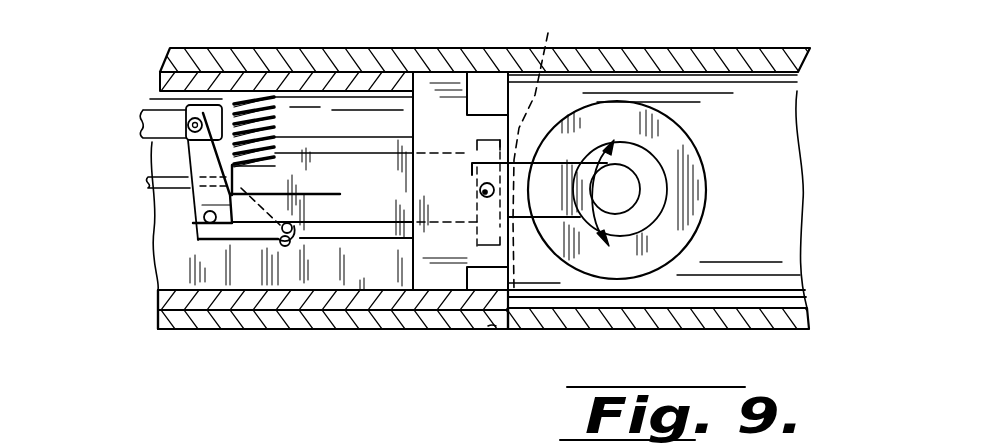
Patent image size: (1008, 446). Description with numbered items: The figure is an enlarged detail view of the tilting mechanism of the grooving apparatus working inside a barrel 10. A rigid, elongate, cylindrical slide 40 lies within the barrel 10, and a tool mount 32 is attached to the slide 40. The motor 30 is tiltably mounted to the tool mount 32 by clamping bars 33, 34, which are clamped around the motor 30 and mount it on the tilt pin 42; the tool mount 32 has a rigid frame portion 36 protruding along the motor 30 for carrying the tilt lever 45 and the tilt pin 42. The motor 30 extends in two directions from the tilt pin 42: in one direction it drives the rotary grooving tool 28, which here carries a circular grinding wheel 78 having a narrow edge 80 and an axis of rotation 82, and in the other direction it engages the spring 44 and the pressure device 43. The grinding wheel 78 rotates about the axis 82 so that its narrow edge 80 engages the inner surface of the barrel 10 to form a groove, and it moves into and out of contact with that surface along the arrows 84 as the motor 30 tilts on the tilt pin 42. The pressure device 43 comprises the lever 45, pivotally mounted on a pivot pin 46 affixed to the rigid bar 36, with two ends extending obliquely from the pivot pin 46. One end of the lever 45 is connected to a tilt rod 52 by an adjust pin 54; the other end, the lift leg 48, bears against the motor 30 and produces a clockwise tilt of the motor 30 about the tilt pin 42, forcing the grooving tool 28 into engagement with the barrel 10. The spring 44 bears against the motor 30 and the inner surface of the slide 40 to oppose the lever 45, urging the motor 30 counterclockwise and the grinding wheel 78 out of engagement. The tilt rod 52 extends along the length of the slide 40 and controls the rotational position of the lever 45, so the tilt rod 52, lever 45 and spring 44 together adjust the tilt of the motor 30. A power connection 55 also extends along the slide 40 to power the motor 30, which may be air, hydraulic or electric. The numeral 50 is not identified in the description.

The barrel 10 is at (384, 52).
The rotary grooving tool 28 is at (577, 222).
The motor 30 is at (380, 207).
The tool mount 32 is at (438, 95).
The clamping bar 33 is at (541, 147).
The clamping bar 34 is at (492, 330).
The rigid frame portion 36 is at (337, 245).
The slide 40 is at (314, 72).
The tilt pin 42 is at (478, 194).
The pressure device 43 is at (202, 248).
The spring 44 is at (242, 100).
The tilt lever 45 is at (212, 243).
The pivot pin 46 is at (205, 219).
The lift leg 48 is at (282, 244).
The link 50 is at (258, 242).
The tilt rod 52 is at (160, 110).
The adjust pin 54 is at (196, 117).
The power connection 55 is at (150, 178).
The circular grinding wheel 78 is at (613, 146).
The narrow edge 80 is at (572, 217).
The axis of rotation 82 is at (600, 198).
The arrows 84 is at (625, 220).